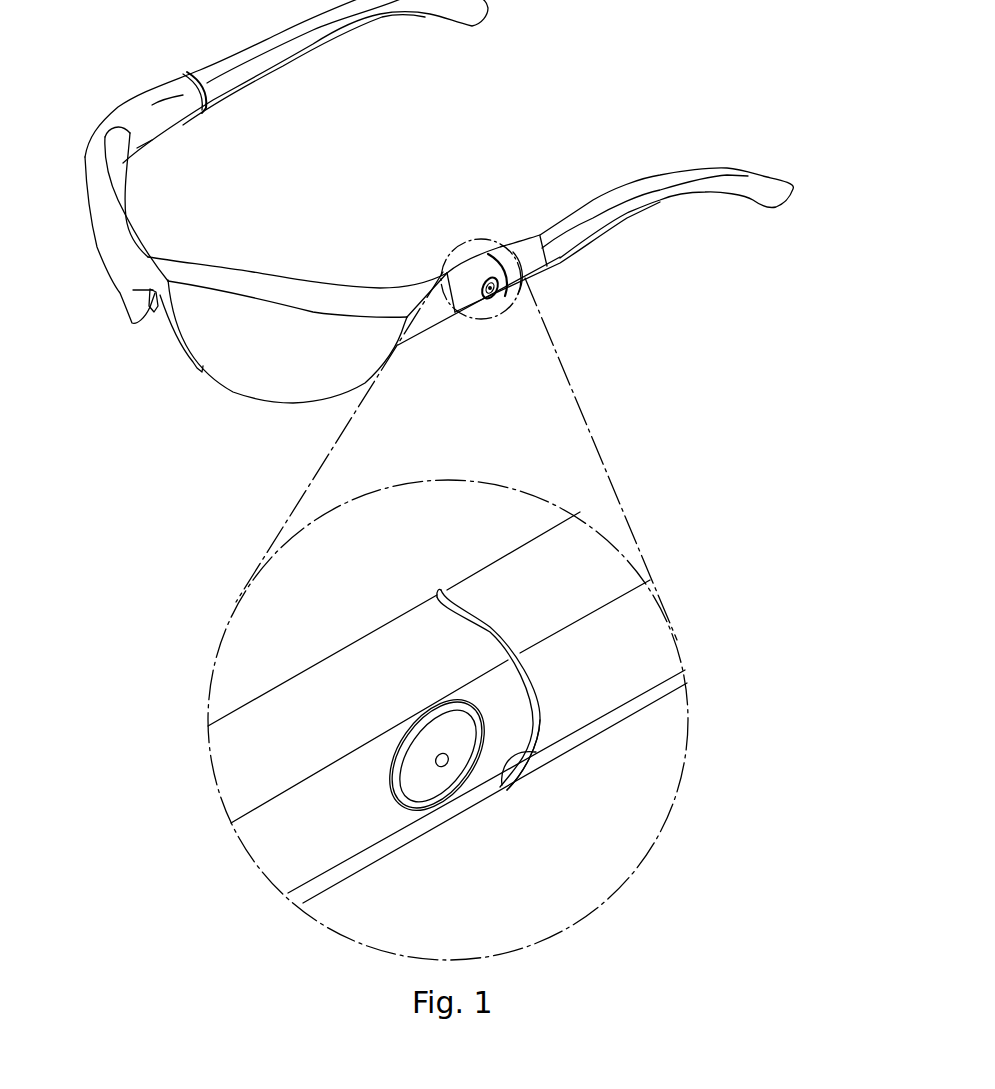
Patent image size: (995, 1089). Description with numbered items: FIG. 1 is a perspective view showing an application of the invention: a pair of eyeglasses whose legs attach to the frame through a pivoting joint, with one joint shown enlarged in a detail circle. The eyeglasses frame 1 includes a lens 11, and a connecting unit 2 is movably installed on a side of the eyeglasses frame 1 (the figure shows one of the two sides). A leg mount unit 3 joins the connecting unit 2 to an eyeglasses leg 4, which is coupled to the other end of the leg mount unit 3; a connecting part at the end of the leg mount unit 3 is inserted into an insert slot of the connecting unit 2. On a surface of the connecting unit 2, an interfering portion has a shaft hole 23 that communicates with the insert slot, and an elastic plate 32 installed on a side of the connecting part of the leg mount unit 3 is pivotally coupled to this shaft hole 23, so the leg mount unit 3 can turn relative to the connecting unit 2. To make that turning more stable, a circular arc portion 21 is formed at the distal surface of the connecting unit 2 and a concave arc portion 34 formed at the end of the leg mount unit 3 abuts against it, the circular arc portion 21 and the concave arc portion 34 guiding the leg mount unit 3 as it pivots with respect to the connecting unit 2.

The eyeglasses frame 1 is at (421, 451).
The lens 11 is at (112, 277).
The connecting unit 2 is at (447, 510).
The leg mount unit 3 is at (500, 228).
The eyeglasses leg 4 is at (724, 165).
The circular arc portion 21 is at (508, 790).
The shaft hole 23 is at (482, 808).
The elastic plate 32 is at (425, 783).
The concave arc portion 34 is at (535, 732).